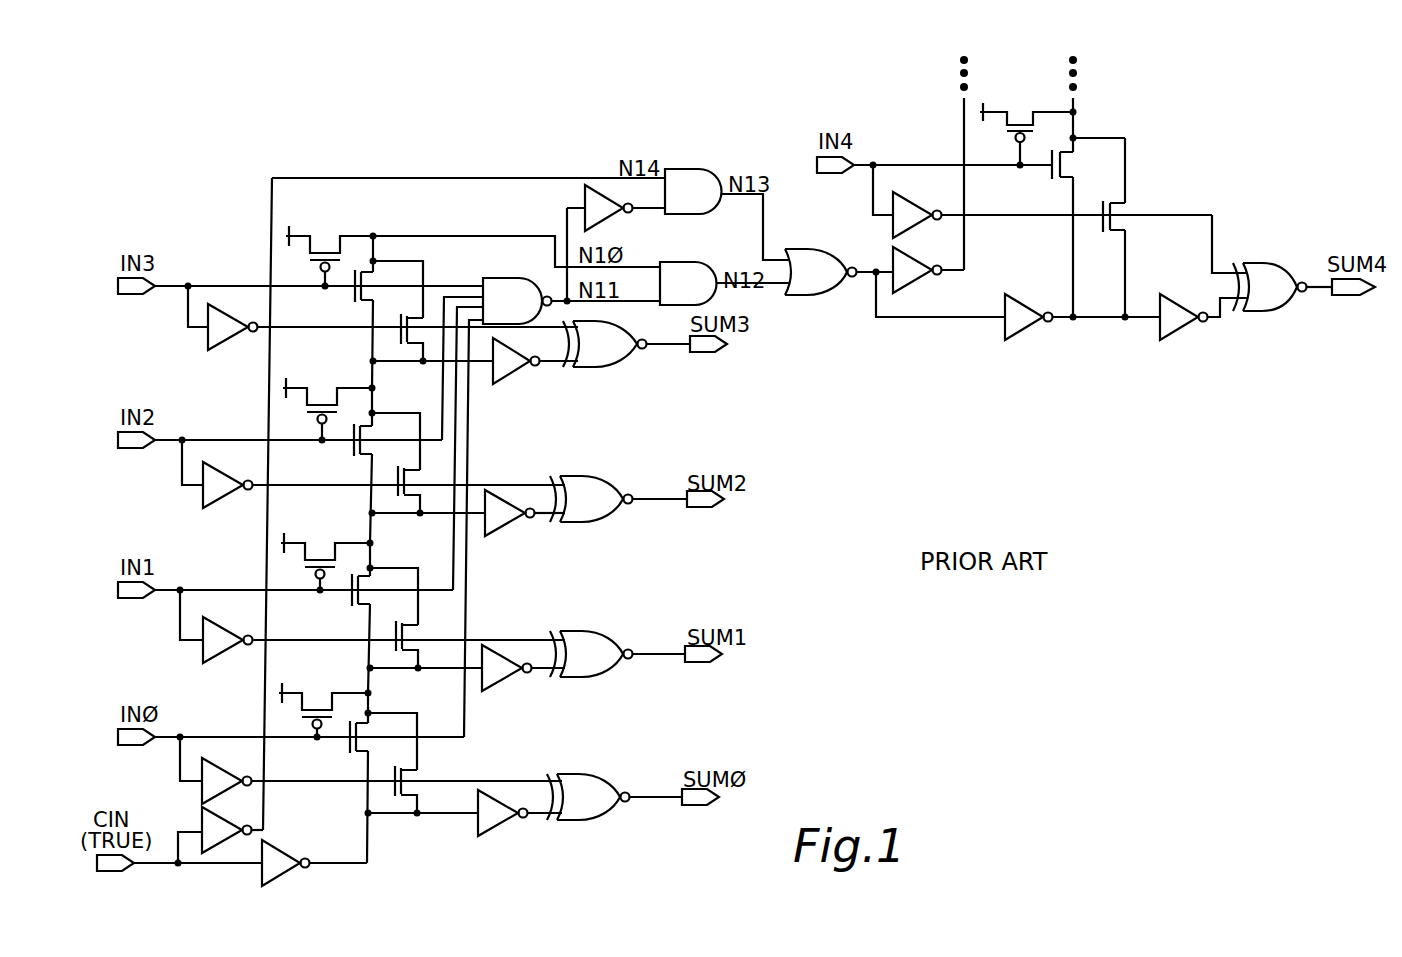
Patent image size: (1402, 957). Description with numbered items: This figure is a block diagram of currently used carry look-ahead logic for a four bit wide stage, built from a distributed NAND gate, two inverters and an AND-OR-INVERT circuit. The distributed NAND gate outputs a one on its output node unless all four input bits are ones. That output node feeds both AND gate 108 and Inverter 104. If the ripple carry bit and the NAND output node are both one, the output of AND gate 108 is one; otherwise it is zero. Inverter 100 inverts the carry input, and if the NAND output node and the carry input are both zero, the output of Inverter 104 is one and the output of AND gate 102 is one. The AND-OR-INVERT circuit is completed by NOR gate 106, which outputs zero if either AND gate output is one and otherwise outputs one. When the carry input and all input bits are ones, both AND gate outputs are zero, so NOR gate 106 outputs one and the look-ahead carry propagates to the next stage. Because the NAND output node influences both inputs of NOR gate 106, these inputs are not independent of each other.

The Inverter 100 is at (200, 818).
The AND gate 102 is at (696, 180).
The Inverter 104 is at (606, 186).
The NOR gate 106 is at (810, 256).
The AND gate 108 is at (687, 263).